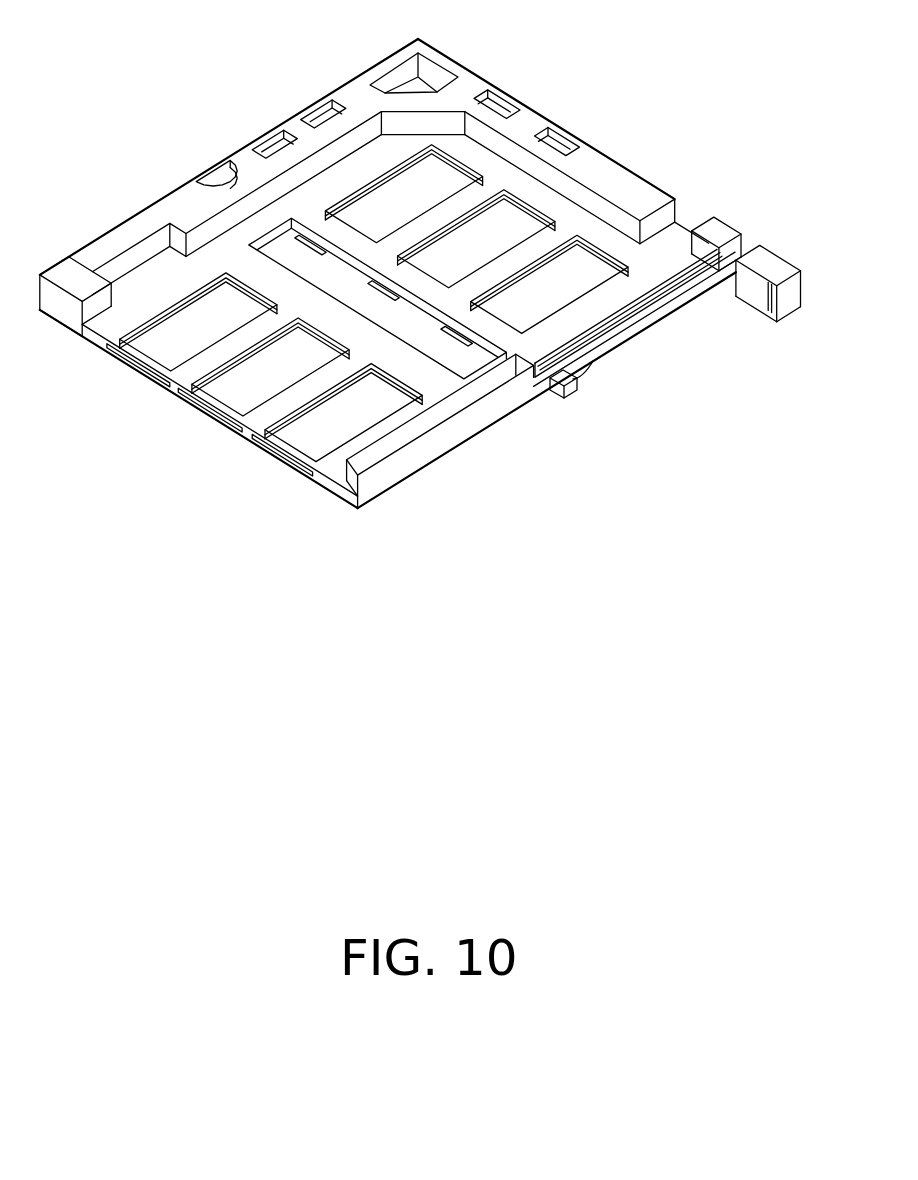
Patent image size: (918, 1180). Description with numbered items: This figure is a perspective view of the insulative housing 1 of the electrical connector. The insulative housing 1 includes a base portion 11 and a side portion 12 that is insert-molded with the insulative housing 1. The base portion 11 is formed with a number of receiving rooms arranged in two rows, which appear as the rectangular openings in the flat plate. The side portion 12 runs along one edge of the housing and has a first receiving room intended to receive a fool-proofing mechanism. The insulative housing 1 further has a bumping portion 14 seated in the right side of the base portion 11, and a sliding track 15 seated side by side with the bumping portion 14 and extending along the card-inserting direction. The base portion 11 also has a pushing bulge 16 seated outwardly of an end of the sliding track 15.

The insulative housing 1 is at (222, 128).
The base portion 11 is at (552, 207).
The side portion 12 is at (263, 172).
The bumping portion 14 is at (442, 412).
The sliding track 15 is at (638, 307).
The pushing bulge 16 is at (575, 377).